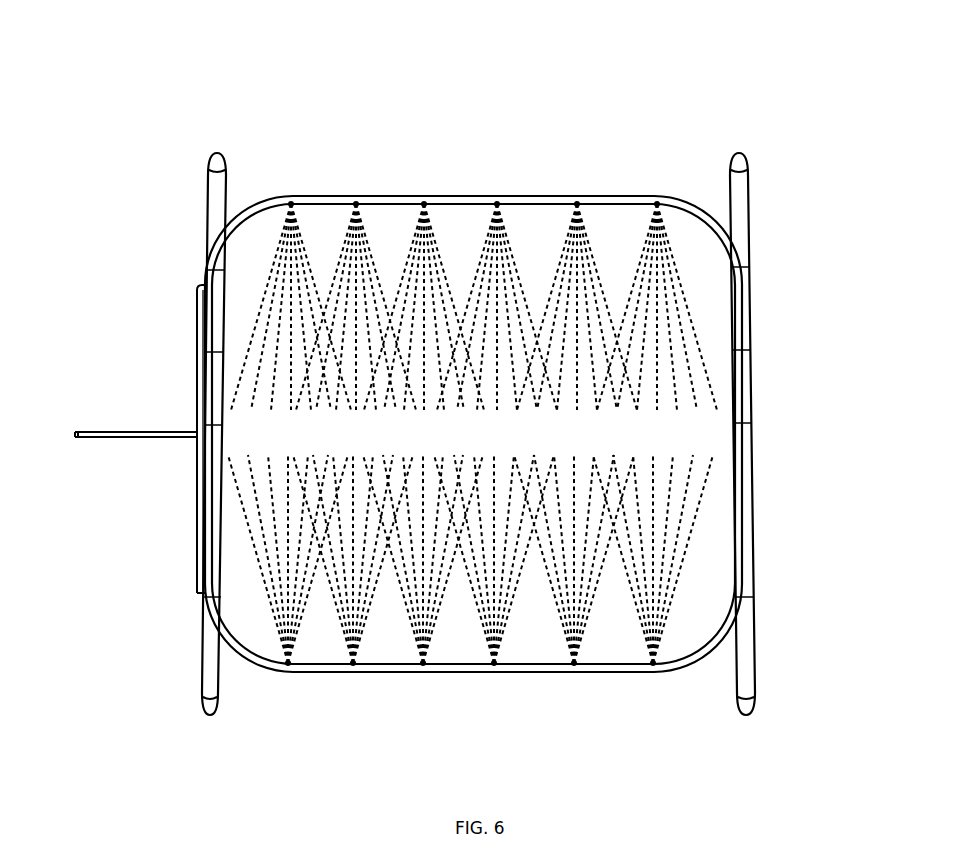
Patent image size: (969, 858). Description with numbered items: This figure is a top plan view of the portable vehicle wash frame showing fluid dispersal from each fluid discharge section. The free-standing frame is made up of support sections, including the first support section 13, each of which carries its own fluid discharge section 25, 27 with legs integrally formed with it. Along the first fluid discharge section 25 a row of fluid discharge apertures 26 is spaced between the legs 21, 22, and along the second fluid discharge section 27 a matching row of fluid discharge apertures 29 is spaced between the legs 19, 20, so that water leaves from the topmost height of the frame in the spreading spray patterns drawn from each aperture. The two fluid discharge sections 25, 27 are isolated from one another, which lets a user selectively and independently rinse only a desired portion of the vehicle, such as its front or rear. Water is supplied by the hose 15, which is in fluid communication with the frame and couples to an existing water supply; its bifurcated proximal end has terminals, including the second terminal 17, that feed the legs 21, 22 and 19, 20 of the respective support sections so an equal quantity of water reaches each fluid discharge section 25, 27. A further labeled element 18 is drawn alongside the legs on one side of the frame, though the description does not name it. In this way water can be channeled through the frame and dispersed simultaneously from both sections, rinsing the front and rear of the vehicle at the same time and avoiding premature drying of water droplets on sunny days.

The first support section 13 is at (546, 94).
The hose 15 is at (92, 438).
The second terminal 17 is at (197, 538).
The mounting bracket 18 is at (197, 348).
The leg 19 is at (735, 428).
The leg 20 is at (222, 430).
The leg 21 is at (750, 398).
The leg 22 is at (202, 388).
The fluid discharge section 25 is at (672, 235).
The fluid discharge apertures 26 is at (424, 196).
The fluid discharge section 27 is at (665, 650).
The fluid discharge apertures 29 is at (423, 672).